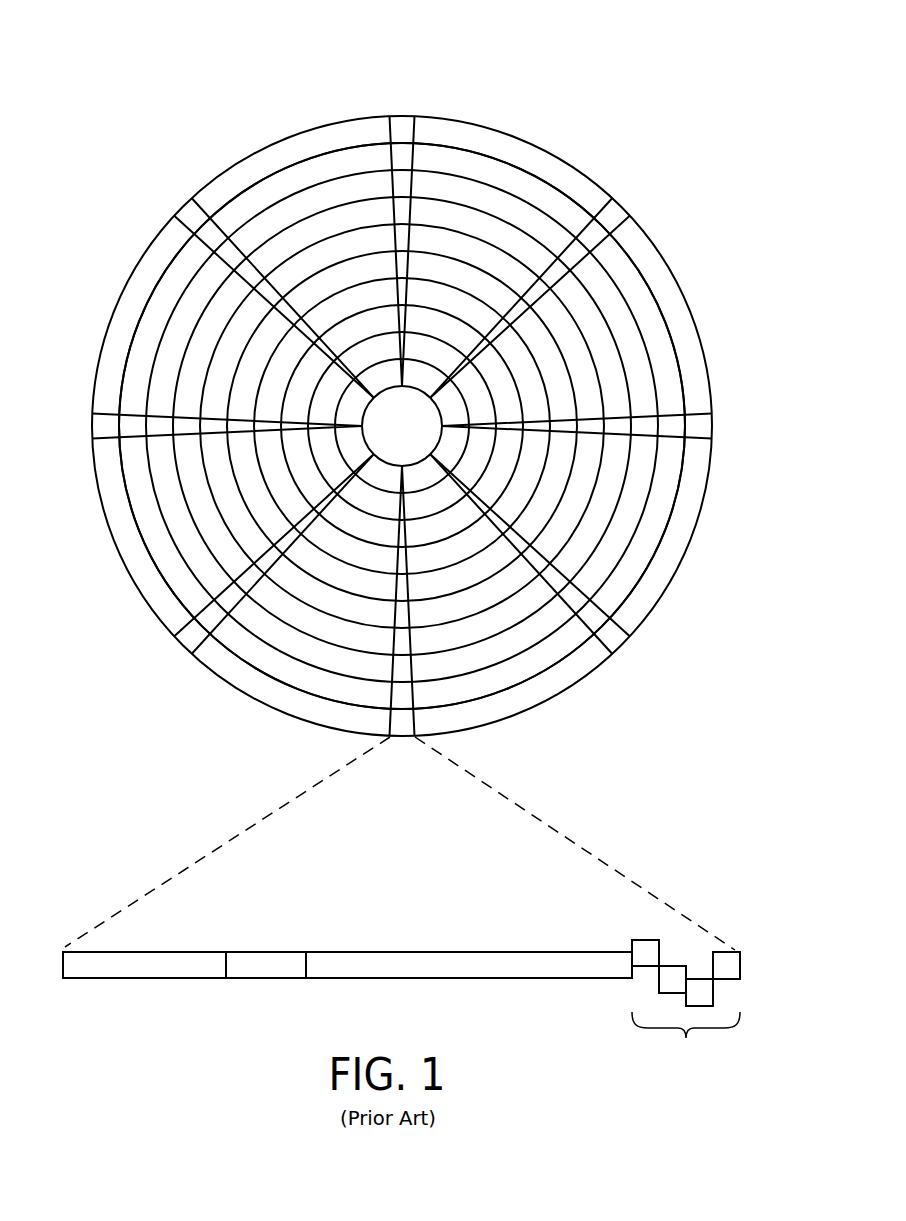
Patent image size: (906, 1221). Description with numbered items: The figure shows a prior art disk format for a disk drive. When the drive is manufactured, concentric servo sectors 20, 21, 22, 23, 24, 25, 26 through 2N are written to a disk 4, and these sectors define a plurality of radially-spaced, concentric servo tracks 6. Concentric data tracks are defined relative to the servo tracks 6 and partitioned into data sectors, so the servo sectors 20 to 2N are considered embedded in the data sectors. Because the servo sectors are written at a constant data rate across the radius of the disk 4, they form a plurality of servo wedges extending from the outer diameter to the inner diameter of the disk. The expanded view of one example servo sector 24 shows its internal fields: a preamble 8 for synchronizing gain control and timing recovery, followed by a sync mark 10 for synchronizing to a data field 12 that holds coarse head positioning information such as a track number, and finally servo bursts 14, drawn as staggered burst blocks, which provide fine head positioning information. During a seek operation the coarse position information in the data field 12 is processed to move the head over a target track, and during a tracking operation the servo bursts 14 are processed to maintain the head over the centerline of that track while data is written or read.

The disk 4 is at (175, 120).
The servo tracks 6 is at (507, 178).
The servo sector 20 is at (402, 122).
The servo sector 21 is at (612, 212).
The servo sector 22 is at (704, 426).
The servo sector 23 is at (613, 637).
The servo sector 24 is at (264, 814).
The servo sector 25 is at (187, 640).
The servo sector 26 is at (97, 425).
The servo sector 2N is at (188, 212).
The preamble 8 is at (124, 978).
The sync mark 10 is at (263, 978).
The data field 12 is at (455, 978).
The servo bursts 14 is at (622, 923).